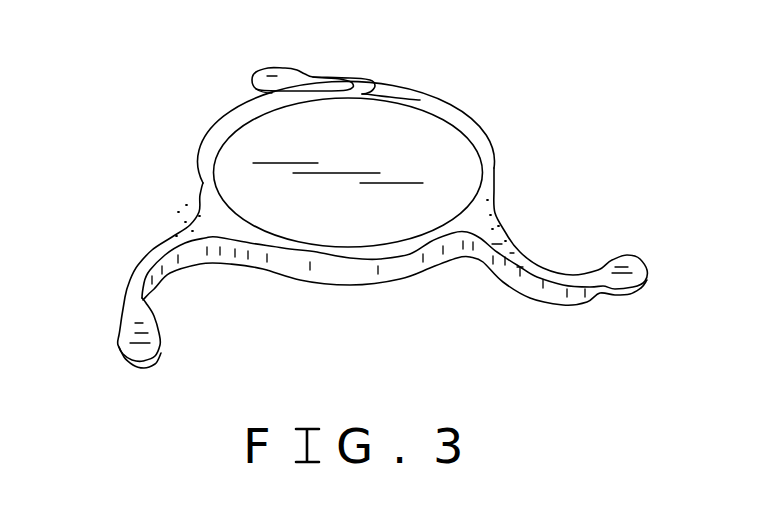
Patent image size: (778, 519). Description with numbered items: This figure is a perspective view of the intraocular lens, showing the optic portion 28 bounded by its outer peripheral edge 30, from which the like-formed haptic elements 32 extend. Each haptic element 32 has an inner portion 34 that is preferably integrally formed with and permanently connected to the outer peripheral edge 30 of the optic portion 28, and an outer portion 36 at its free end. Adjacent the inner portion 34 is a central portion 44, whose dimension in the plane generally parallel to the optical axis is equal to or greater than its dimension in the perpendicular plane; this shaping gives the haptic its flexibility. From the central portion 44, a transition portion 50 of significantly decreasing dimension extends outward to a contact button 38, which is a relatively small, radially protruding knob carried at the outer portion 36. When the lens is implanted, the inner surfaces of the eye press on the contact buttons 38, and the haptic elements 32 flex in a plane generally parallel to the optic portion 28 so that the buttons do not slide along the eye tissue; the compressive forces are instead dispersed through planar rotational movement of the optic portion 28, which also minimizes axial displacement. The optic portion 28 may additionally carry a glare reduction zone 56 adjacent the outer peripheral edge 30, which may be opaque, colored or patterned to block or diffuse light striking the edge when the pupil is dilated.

The optic portion 28 is at (397, 132).
The outer peripheral edge 30 is at (495, 157).
The haptic element 32 is at (522, 255).
The inner portion 34 is at (498, 208).
The outer portion 36 is at (252, 83).
The contact button 38 is at (282, 70).
The central portion 44 is at (148, 252).
The transition portion 50 is at (157, 333).
The glare reduction zone 56 is at (347, 264).